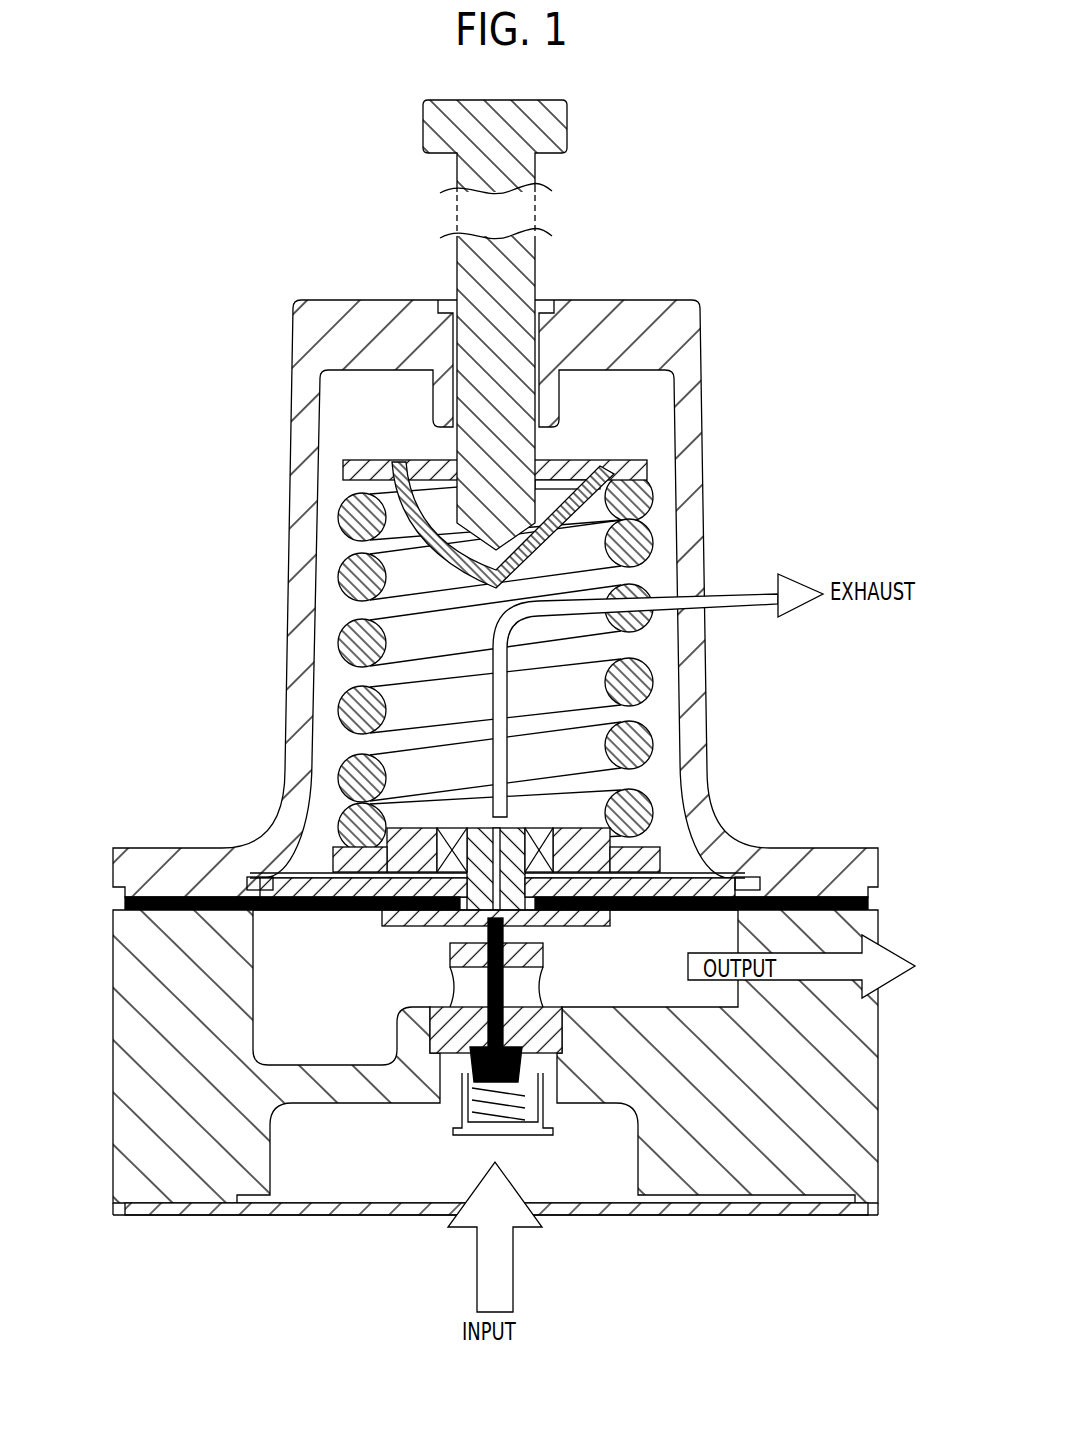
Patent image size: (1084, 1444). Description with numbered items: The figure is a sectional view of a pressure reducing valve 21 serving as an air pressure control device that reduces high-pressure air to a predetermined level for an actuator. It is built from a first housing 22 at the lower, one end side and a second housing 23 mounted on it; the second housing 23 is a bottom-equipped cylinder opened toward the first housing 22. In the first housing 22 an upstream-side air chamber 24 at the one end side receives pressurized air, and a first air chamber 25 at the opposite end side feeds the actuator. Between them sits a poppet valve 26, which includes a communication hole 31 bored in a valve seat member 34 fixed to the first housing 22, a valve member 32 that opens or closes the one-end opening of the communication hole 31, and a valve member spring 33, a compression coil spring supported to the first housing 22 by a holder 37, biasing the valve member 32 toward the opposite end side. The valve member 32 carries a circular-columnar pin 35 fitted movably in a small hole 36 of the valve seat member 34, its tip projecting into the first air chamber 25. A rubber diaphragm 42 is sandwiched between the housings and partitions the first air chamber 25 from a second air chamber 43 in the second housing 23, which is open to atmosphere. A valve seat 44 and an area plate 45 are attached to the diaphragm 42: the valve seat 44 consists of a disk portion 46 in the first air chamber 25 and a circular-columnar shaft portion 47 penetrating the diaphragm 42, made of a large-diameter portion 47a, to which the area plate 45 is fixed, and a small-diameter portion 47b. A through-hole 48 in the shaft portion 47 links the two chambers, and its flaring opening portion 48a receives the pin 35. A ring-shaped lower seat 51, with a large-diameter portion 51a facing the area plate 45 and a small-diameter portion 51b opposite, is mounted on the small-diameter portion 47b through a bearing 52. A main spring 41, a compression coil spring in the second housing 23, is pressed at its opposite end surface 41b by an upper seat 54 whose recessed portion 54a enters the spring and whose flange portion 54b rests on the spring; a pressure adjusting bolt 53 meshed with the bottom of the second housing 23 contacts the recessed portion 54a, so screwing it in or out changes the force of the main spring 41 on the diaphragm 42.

The pressure reducing valve 21 is at (195, 197).
The first housing 22 is at (113, 1110).
The second housing 23 is at (293, 355).
The upstream-side air chamber 24 is at (300, 1165).
The first air chamber 25 is at (285, 1008).
The poppet valve 26 is at (452, 1118).
The communication hole 31 is at (440, 1035).
The valve member 32 is at (440, 1075).
The valve member spring 33 is at (540, 1115).
The valve seat member 34 is at (585, 1010).
The pin 35 is at (480, 1005).
The small hole 36 is at (480, 985).
The holder 37 is at (545, 1133).
The main spring 41 is at (360, 575).
The opposite end surface 41b is at (600, 462).
The diaphragm 42 is at (272, 912).
The second air chamber 43 is at (330, 548).
The valve seat 44 is at (168, 745).
The area plate 45 is at (745, 880).
The disk portion 46 is at (270, 880).
The shaft portion 47 is at (208, 733).
The large-diameter portion 47a is at (430, 890).
The small-diameter portion 47b is at (455, 858).
The through-hole 48 is at (600, 820).
The opening portion 48a is at (535, 928).
The lower seat 51 is at (805, 713).
The large-diameter portion 51a is at (680, 870).
The small-diameter portion 51b is at (560, 825).
The bearing 52 is at (452, 822).
The pressure adjusting bolt 53 is at (455, 272).
The upper seat 54 is at (735, 247).
The recessed portion 54a is at (553, 503).
The flange portion 54b is at (597, 483).